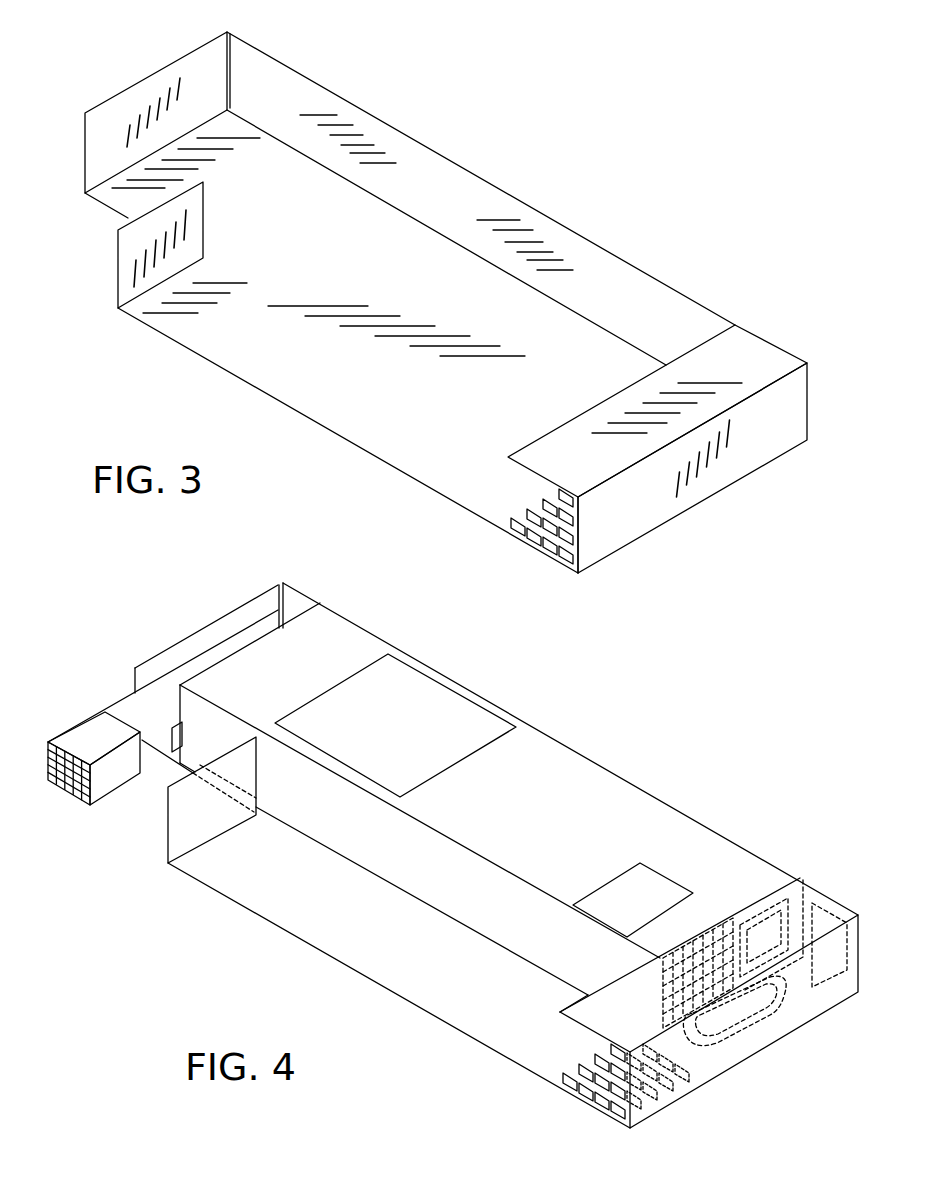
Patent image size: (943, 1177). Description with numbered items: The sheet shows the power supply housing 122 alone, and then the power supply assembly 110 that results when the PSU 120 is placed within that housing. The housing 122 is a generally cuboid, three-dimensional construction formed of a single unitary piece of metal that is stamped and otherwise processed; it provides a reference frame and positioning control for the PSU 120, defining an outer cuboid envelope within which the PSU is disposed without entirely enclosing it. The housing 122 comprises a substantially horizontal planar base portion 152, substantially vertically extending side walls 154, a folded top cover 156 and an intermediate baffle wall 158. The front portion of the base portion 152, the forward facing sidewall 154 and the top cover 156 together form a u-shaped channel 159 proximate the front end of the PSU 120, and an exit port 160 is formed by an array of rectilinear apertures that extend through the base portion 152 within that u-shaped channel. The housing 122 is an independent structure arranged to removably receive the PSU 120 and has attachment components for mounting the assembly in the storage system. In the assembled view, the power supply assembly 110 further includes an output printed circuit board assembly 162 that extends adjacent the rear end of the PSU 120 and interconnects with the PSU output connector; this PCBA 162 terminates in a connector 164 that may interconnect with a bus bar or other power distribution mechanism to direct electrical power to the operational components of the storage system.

In FIG. 4, the power supply assembly 110 is at (468, 855).
In FIG. 4, the PSU 120 is at (626, 811).
In FIG. 3, the power supply housing 122 is at (477, 336).
In FIG. 4, the power supply housing 122 is at (481, 855).
In FIG. 3, the base portion 152 is at (395, 437).
In FIG. 4, the base portion 152 is at (352, 944).
In FIG. 3, the side walls 154 is at (148, 85).
In FIG. 4, the side walls 154 is at (218, 620).
In FIG. 3, the folded top cover 156 is at (750, 358).
In FIG. 4, the folded top cover 156 is at (572, 1003).
In FIG. 3, the intermediate baffle wall 158 is at (132, 250).
In FIG. 4, the intermediate baffle wall 158 is at (187, 823).
In FIG. 3, the u-shaped channel 159 is at (529, 587).
In FIG. 3, the exit port 160 is at (498, 510).
In FIG. 4, the exit port 160 is at (564, 1109).
In FIG. 4, the output printed circuit board assembly 162 is at (153, 698).
In FIG. 4, the connector 164 is at (93, 743).